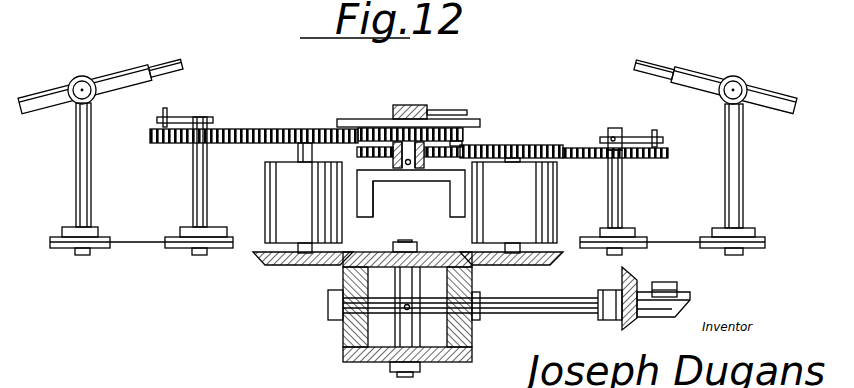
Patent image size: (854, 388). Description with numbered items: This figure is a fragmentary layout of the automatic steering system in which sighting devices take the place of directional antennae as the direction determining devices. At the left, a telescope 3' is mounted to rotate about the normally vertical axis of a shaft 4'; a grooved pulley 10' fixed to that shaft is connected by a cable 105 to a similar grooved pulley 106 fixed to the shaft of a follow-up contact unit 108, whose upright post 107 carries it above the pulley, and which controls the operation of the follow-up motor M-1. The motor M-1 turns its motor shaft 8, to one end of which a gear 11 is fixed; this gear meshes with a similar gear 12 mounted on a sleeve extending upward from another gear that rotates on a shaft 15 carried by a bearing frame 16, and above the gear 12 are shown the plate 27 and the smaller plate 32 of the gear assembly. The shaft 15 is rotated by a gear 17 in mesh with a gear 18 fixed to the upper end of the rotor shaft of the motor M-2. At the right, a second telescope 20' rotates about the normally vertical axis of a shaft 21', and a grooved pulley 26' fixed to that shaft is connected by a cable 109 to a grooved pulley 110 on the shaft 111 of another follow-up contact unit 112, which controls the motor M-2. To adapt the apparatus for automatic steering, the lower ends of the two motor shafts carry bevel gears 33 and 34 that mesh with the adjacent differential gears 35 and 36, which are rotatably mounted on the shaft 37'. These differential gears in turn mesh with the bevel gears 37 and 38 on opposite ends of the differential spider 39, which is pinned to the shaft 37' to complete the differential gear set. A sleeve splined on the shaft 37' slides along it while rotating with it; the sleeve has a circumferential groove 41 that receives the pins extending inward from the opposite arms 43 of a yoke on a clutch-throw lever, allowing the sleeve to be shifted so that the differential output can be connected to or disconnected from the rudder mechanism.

The telescope 3' is at (101, 84).
The shaft 4' is at (68, 165).
The grooved pulley 10' is at (67, 235).
The cable 105 is at (115, 243).
The grooved pulley 106 is at (174, 238).
The post 107 is at (193, 186).
The follow-up contact unit 108 is at (220, 122).
The gear 11 is at (280, 129).
The follow-up motor M-1 is at (303, 202).
The motor shaft 8 is at (298, 151).
The gear 17 is at (325, 152).
The plate gear 27 is at (358, 120).
The plate 32 is at (443, 108).
The gear 12 is at (465, 137).
The shaft 15 is at (418, 182).
The bearing frame 16 is at (378, 183).
The gear 18 is at (528, 146).
The motor M-2 is at (514, 205).
The follow-up contact unit 112 is at (634, 128).
The shaft 111 is at (616, 197).
The grooved pulley 110 is at (636, 237).
The cable 109 is at (655, 244).
The telescope 20' is at (715, 85).
The shaft 21' is at (751, 166).
The grooved pulley 26' is at (747, 234).
The bevel gear 33 is at (272, 265).
The bevel gear 34 is at (513, 265).
The bevel gear 37 is at (407, 248).
The differential gear 35 is at (343, 334).
The differential gear 36 is at (472, 333).
The bevel gear 38 is at (388, 363).
The differential spider 39 is at (408, 327).
The shaft 37' is at (463, 312).
The arms 43 is at (670, 283).
The circumferential groove 41 is at (660, 310).